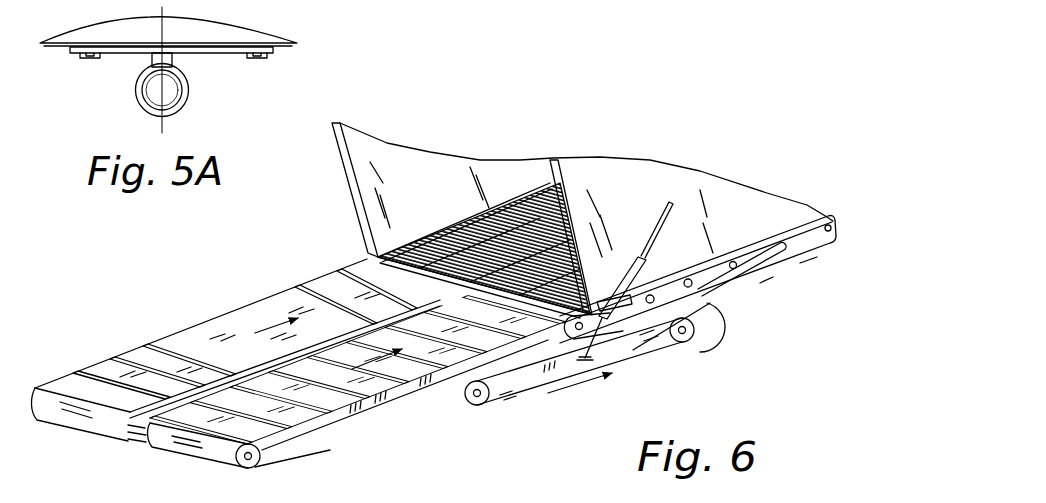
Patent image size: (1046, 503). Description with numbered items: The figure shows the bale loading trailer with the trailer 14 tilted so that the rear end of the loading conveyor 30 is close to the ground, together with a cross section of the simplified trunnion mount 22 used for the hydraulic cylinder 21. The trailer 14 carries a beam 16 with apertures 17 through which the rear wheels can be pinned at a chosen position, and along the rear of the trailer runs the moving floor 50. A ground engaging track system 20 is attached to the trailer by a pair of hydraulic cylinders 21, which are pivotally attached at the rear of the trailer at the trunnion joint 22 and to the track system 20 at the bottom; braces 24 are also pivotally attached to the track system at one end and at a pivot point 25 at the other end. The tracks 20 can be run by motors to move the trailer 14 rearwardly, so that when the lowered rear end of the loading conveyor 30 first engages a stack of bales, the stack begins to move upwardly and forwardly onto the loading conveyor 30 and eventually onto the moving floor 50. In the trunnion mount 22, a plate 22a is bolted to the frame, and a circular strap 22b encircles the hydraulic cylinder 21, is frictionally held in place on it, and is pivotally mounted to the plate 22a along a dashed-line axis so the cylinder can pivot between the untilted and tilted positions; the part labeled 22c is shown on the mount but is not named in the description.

In FIG. 6, the trailer 14 is at (719, 183).
In FIG. 6, the beam 16 is at (810, 222).
In FIG. 6, the apertures 17 is at (733, 263).
In FIG. 6, the ground engaging track system 20 is at (520, 393).
In FIG. 5A, the hydraulic cylinder 21 is at (147, 88).
In FIG. 6, the hydraulic cylinder 21 is at (640, 256).
In FIG. 5A, the trunnion mount 22 is at (186, 113).
In FIG. 6, the trunnion mount 22 is at (635, 330).
In FIG. 5A, the plate 22a is at (231, 53).
In FIG. 5A, the circular strap 22b is at (147, 113).
In FIG. 5A, the bracket stem 22c is at (177, 60).
In FIG. 6, the braces 24 is at (712, 293).
In FIG. 6, the pivot point 25 is at (777, 247).
In FIG. 6, the loading conveyor 30 is at (192, 330).
In FIG. 6, the moving floor 50 is at (435, 218).